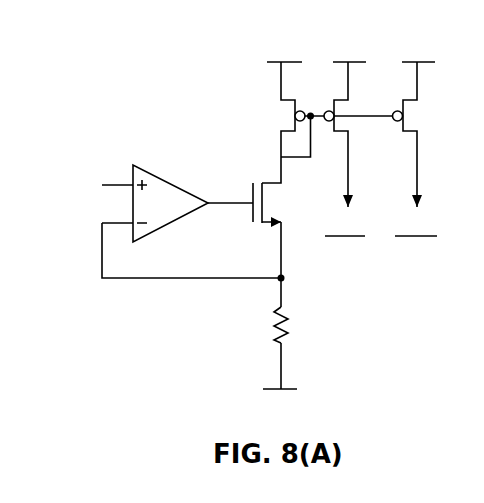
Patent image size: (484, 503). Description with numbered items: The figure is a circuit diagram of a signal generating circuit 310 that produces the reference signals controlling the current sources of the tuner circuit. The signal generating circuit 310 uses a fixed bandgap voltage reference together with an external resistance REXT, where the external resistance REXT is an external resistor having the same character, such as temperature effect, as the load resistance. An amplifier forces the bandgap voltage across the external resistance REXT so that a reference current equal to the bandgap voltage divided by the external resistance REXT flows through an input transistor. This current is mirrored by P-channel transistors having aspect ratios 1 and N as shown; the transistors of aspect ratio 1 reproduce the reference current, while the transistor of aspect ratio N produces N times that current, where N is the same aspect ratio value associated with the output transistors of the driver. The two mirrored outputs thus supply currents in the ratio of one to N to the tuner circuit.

The signal generating circuit 310 is at (214, 114).
The aspect ratio of P-channel transistor 1 is at (316, 134).
The aspect ratio of P-channel transistor N is at (419, 134).
The external resistance REXT is at (304, 325).